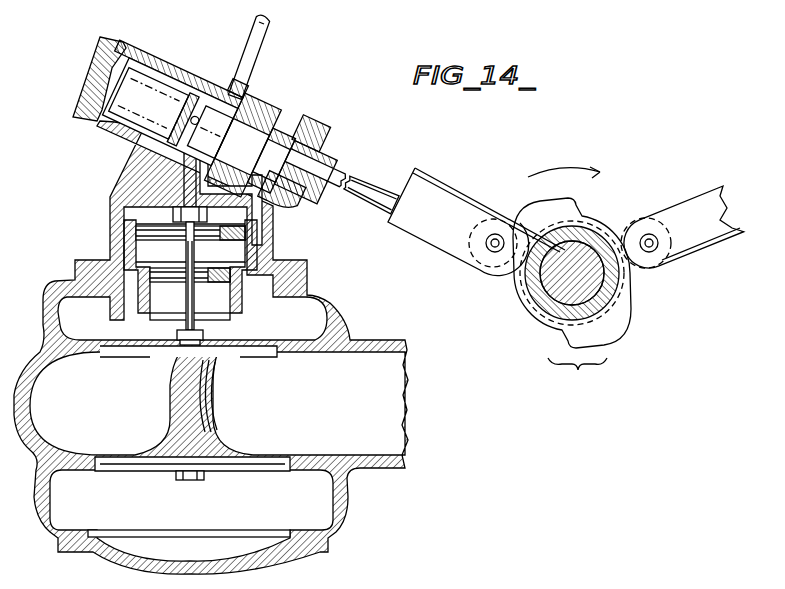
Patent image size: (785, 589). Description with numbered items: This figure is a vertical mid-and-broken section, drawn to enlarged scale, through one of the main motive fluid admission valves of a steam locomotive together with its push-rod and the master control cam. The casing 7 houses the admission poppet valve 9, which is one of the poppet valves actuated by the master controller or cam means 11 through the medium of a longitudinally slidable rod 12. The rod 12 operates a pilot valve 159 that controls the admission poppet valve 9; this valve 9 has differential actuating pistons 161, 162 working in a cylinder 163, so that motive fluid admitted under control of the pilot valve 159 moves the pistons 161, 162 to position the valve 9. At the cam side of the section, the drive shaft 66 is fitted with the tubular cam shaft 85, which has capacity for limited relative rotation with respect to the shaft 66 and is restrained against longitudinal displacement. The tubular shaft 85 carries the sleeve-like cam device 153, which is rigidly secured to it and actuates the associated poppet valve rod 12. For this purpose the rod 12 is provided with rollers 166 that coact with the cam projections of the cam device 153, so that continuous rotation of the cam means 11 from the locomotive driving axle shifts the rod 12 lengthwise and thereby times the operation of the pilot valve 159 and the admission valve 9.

The casing 7 is at (334, 303).
The admission poppet valve 9 is at (216, 397).
The master controller or cam means 11 is at (567, 282).
The longitudinally slidable rod 12 is at (371, 186).
The drive shaft 66 is at (556, 297).
The tubular cam shaft 85 is at (614, 293).
The cam device 153 is at (528, 313).
The pilot valve 159 is at (212, 72).
The differential actuating piston 161 is at (221, 282).
The differential actuating piston 162 is at (157, 241).
The cylinder 163 is at (125, 243).
The roller 166 is at (506, 272).